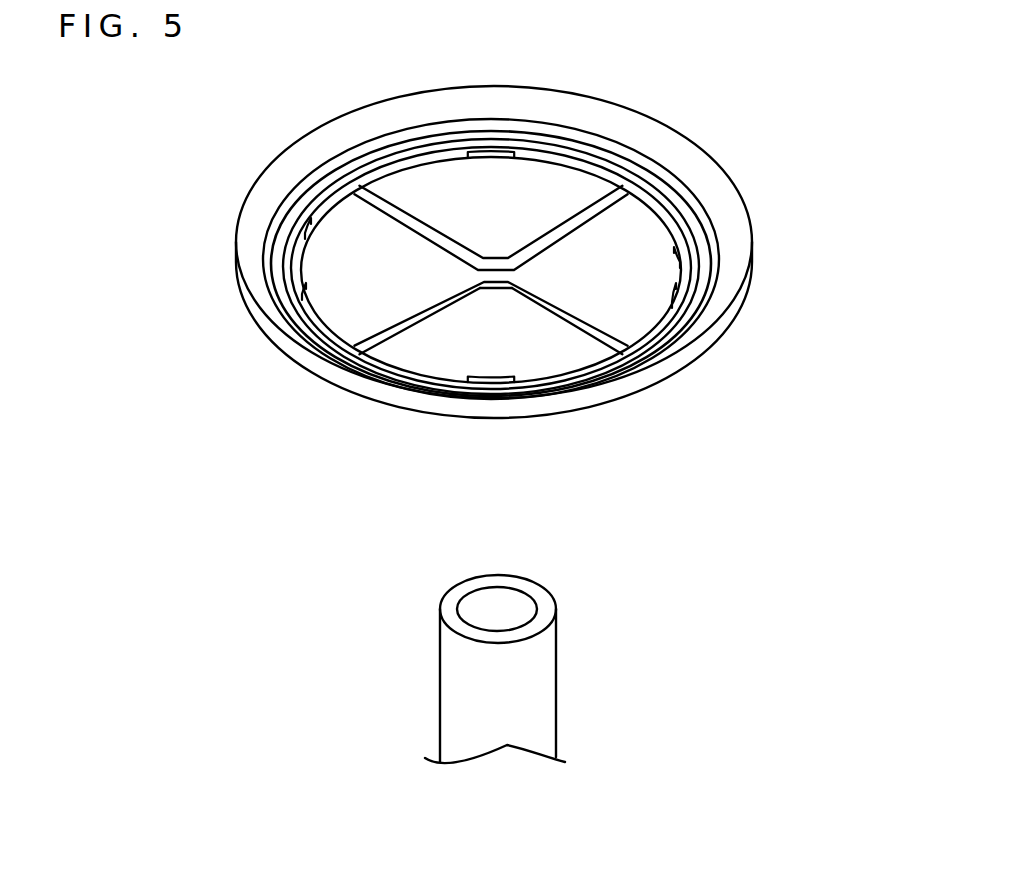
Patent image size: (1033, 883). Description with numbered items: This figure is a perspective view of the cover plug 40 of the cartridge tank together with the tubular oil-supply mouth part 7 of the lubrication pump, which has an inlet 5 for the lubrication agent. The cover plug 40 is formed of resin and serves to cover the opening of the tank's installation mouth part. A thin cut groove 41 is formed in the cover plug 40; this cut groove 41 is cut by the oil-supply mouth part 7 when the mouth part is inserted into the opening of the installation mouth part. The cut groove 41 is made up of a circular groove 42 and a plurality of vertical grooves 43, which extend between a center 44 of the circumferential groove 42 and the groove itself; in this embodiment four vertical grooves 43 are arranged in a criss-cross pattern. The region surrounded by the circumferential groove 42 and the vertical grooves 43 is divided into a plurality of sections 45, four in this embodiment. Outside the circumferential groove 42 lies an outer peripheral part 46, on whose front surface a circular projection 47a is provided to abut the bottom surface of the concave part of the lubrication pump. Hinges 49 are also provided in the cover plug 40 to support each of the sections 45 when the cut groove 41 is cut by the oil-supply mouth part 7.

The cover plug 40 is at (720, 322).
The cut groove 41 is at (184, 333).
The circular groove 42 is at (318, 316).
The vertical grooves 43 is at (365, 347).
The center 44 is at (492, 265).
The sections 45 is at (657, 270).
The outer peripheral part 46 is at (670, 367).
The circular projection 47a is at (588, 388).
The hinges 49 is at (297, 266).
The inlet 5 is at (507, 607).
The oil-supply mouth part 7 is at (530, 712).